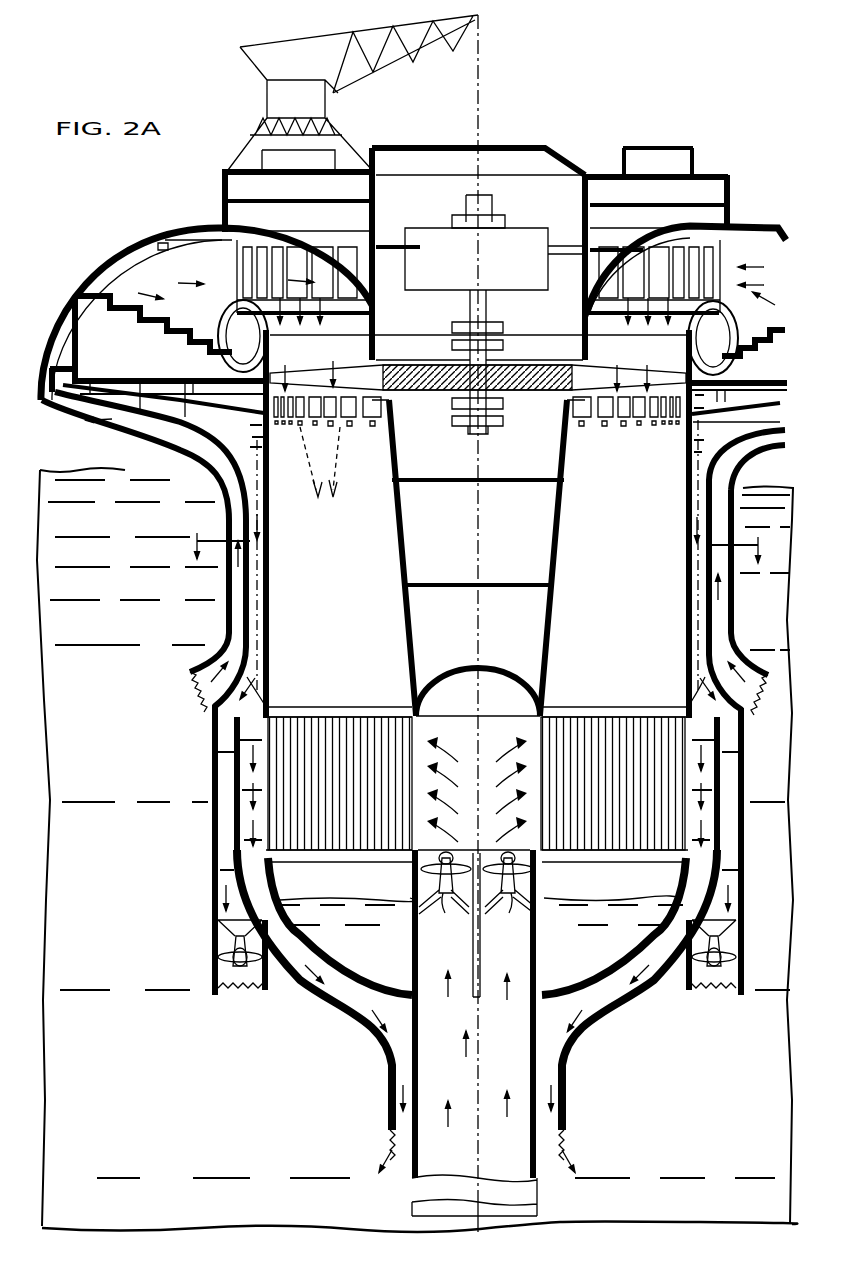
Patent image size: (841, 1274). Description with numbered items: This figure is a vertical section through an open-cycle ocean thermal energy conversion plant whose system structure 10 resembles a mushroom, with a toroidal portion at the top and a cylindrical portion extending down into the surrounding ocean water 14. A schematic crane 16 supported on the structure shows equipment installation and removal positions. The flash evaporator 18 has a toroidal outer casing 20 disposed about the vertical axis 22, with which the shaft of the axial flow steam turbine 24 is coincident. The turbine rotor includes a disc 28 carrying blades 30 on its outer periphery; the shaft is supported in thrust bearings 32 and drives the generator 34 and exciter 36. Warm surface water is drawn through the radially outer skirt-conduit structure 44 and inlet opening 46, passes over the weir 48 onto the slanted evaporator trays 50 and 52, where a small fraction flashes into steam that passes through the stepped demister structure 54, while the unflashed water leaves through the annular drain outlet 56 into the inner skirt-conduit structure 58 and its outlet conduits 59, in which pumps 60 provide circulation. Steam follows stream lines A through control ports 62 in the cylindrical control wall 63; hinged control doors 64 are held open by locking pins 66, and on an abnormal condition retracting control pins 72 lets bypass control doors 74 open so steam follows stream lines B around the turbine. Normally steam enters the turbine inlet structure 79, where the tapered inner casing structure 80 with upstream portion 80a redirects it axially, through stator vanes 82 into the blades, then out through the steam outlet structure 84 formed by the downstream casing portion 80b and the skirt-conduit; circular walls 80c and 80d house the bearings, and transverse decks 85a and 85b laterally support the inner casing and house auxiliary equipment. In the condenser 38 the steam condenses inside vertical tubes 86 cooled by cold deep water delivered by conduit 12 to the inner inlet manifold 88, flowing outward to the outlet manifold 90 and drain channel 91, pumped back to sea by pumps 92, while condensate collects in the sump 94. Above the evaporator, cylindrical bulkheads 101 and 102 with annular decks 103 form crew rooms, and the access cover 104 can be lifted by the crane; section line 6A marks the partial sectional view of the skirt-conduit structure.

The system structure 10 is at (628, 114).
The conduit 12 is at (546, 1210).
The water body level 14 is at (125, 474).
The crane 16 is at (258, 135).
The flash evaporator 18 is at (104, 247).
The outer casing 20 is at (136, 252).
The vertical axis 22 is at (478, 60).
The axial flow steam turbine 24 is at (489, 377).
The disc portion 28 is at (525, 390).
The blades 30 is at (314, 364).
The thrust bearings 32 is at (490, 330).
The generator 34 is at (536, 240).
The exciter 36 is at (490, 200).
The condenser 38 is at (370, 718).
The radially outer skirt-conduit structure 44 is at (232, 618).
The inlet opening 46 is at (53, 400).
The weir 48 is at (72, 370).
The evaporator tray 50 is at (138, 386).
The evaporator tray 52 is at (164, 386).
The stepped moisture separator or demister structure 54 is at (178, 324).
The drain outlet 56 is at (262, 446).
The second skirt-conduit structure 58 is at (314, 614).
The outlet conduits 59 is at (266, 568).
The pumps 60 is at (234, 952).
The control ports 62 is at (240, 262).
The cylindrical control wall 63 is at (240, 298).
The control doors 64 is at (206, 230).
The locking pins 66 is at (165, 252).
The control pins 72 is at (298, 425).
The bypass control doors 74 is at (345, 425).
The turbine inlet structure 79 is at (364, 277).
The tapered inner casing structure 80 is at (405, 319).
The upstream inner casing portion 80a is at (358, 258).
The downstream inner casing portion 80b is at (392, 480).
The circular wall 80c is at (440, 338).
The circular wall 80d is at (415, 410).
The stationary stator vanes 82 is at (260, 340).
The steam outlet structure 84 is at (594, 614).
The transverse deck 85a is at (506, 482).
The transverse deck 85b is at (502, 587).
The vertical tubes 86 is at (326, 722).
The radially inner inlet manifold 88 is at (466, 710).
The outlet manifold 90 is at (244, 772).
The drain channel 91 is at (340, 992).
The pumps 92 is at (477, 898).
The condensate sump 94 is at (604, 914).
The cylindrical bulkhead 101 is at (222, 196).
The cylindrical bulkhead 102 is at (372, 190).
The annular decks 103 is at (372, 212).
The access cover 104 is at (504, 150).
The section line 6A is at (472, 548).
The stream lines A is at (226, 281).
The stream lines B is at (320, 472).